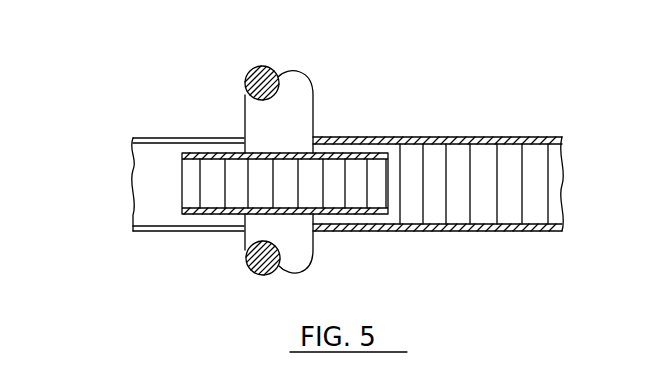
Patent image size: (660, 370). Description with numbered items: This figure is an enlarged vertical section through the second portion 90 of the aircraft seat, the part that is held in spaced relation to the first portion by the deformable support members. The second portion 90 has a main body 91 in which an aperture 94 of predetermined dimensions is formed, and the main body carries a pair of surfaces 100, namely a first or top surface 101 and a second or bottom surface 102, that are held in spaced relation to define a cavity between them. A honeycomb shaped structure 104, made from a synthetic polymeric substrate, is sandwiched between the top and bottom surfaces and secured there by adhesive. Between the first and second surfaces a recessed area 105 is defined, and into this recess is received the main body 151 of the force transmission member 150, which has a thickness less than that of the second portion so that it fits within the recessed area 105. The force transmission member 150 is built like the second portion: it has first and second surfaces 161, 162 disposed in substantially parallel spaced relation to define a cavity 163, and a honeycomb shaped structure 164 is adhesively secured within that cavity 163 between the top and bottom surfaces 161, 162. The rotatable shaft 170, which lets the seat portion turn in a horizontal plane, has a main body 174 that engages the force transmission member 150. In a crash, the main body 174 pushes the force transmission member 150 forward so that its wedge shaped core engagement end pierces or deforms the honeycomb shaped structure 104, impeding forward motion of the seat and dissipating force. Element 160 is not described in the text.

The second portion 90 is at (532, 130).
The main body 91 is at (560, 135).
The aperture 94 is at (171, 136).
The pair of surfaces 100 is at (436, 225).
The first or top surface 101 is at (498, 135).
The second or bottom surface 102 is at (520, 228).
The honeycomb shaped structure 104 is at (515, 182).
The recessed area 105 is at (346, 225).
The force transmission member 150 is at (166, 172).
The main body 151 is at (340, 173).
The clamp insert 160 is at (216, 153).
The first or top surface 161 is at (326, 152).
The second or bottom surface 162 is at (231, 228).
The cavity 163 is at (164, 190).
The honeycomb shaped structure 164 is at (365, 173).
The rotatable shaft 170 is at (305, 66).
The main body 174 is at (272, 140).